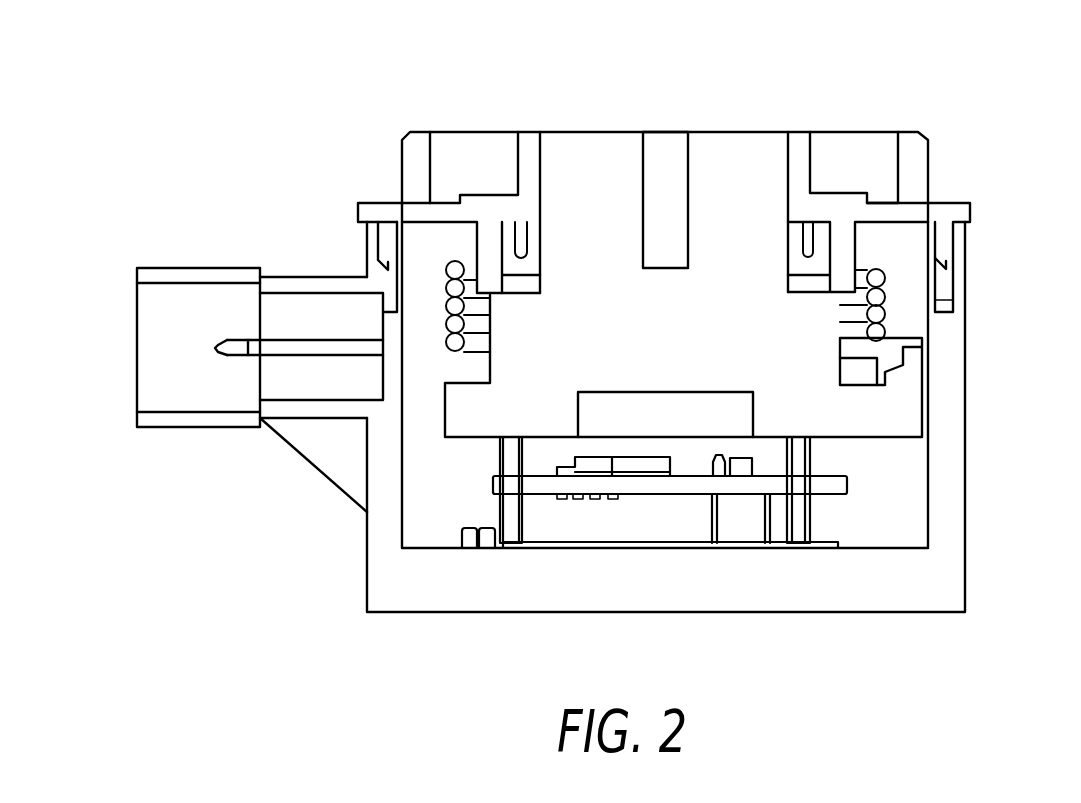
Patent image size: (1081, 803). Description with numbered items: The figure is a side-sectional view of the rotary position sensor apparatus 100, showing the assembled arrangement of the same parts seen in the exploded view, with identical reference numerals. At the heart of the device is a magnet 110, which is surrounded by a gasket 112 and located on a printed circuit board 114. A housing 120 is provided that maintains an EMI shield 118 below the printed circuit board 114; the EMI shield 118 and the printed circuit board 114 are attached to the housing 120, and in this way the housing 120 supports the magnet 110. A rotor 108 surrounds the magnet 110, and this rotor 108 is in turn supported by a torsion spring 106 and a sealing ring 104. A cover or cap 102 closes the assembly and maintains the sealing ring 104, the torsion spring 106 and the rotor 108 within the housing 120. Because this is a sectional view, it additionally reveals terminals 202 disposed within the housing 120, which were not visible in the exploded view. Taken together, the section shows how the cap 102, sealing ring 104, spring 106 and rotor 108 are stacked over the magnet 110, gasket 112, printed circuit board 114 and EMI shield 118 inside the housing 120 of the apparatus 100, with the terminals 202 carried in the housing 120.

The rotary position sensor apparatus 100 is at (164, 73).
The cover or cap 102 is at (388, 203).
The sealing ring 104 is at (817, 240).
The torsion spring 106 is at (443, 292).
The rotor 108 is at (575, 185).
The magnet 110 is at (697, 413).
The gasket 112 is at (945, 289).
The printed circuit board (PCB) 114 is at (540, 485).
The EMI shield 118 is at (622, 547).
The housing 120 is at (166, 268).
The terminals 202 is at (293, 324).